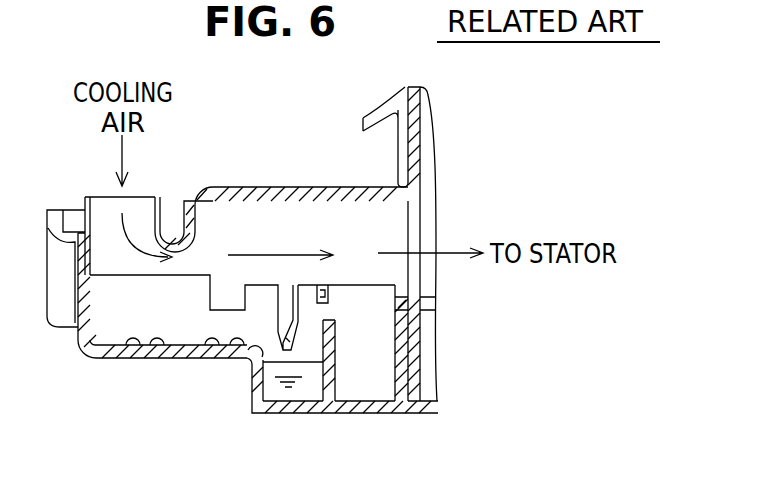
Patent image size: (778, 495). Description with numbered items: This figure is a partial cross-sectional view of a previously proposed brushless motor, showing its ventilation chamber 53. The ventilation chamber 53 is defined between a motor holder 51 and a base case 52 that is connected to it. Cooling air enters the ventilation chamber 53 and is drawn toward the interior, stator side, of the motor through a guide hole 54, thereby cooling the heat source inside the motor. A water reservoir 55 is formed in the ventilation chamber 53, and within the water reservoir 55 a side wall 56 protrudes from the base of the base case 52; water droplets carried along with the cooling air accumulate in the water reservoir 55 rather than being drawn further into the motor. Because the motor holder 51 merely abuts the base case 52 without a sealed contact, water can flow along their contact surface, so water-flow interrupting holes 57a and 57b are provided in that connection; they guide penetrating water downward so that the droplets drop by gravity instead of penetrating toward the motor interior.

The motor holder 51 is at (287, 187).
The base case 52 is at (331, 414).
The ventilation chamber 53 is at (122, 313).
The guide hole 54 is at (405, 200).
The water reservoir 55 is at (275, 392).
The side wall 56 is at (338, 340).
The water-flow interrupting hole 57a is at (282, 333).
The water-flow interrupting hole 57b is at (327, 296).